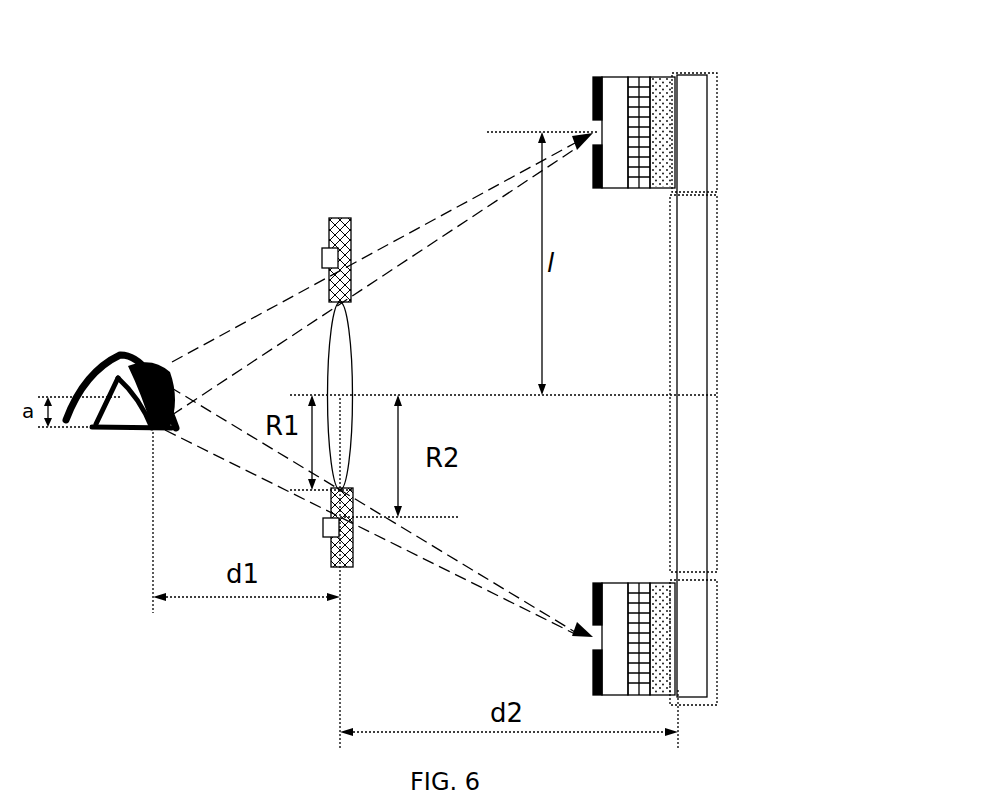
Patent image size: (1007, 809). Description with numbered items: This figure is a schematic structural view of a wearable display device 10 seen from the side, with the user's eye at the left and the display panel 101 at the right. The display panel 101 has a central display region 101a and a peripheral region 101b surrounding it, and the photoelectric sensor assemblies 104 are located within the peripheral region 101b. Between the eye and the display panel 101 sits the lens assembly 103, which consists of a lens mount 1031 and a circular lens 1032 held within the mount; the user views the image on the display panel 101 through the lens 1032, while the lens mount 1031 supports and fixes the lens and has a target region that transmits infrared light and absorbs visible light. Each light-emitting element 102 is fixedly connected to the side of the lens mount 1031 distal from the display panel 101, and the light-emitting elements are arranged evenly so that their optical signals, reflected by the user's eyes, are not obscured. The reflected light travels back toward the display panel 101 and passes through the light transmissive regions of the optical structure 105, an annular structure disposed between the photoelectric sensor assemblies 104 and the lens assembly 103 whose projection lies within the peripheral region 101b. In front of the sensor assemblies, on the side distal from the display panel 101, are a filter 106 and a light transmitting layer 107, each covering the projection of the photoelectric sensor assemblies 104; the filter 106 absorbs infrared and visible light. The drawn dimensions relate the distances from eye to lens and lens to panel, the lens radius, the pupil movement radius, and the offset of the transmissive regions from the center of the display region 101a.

The wearable display device 10 is at (99, 171).
The display panel 101 is at (690, 468).
The display region 101a is at (718, 402).
The peripheral region 101b is at (718, 172).
The light-emitting element 102 is at (337, 300).
The lens assembly 103 is at (255, 386).
The lens mount 1031 is at (328, 232).
The lens 1032 is at (335, 348).
The photoelectric sensor assembly 104 is at (660, 118).
The optical structure 105 is at (592, 100).
The filter 106 is at (643, 92).
The light transmitting layer 107 is at (614, 105).